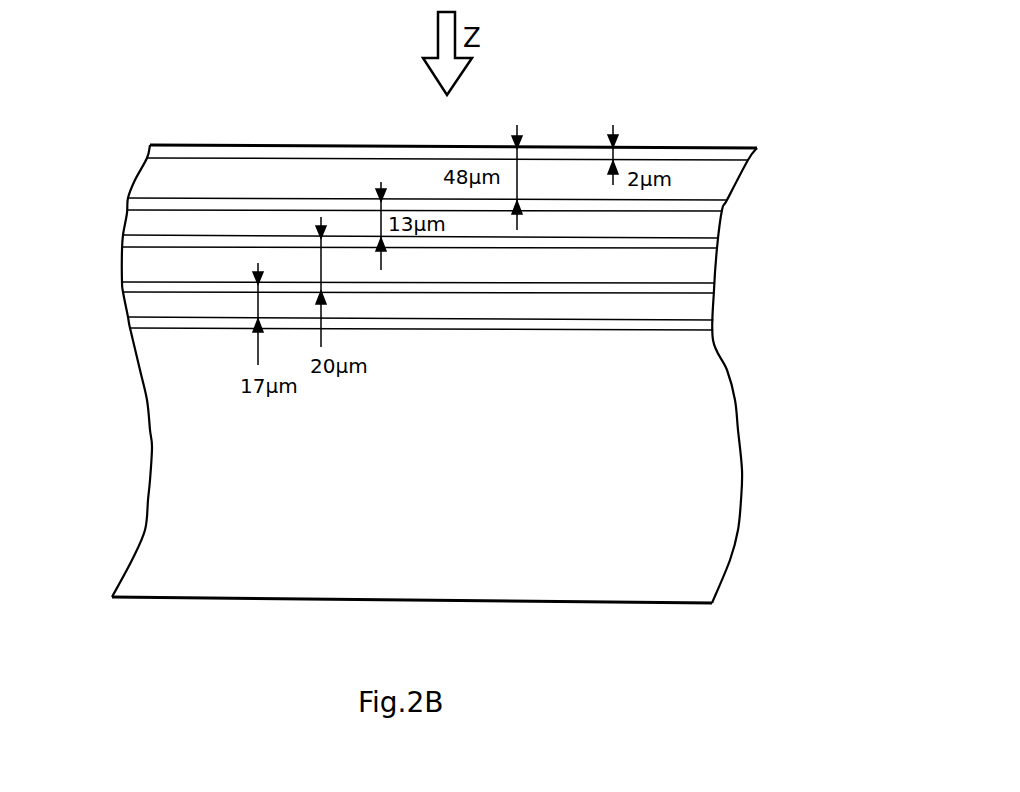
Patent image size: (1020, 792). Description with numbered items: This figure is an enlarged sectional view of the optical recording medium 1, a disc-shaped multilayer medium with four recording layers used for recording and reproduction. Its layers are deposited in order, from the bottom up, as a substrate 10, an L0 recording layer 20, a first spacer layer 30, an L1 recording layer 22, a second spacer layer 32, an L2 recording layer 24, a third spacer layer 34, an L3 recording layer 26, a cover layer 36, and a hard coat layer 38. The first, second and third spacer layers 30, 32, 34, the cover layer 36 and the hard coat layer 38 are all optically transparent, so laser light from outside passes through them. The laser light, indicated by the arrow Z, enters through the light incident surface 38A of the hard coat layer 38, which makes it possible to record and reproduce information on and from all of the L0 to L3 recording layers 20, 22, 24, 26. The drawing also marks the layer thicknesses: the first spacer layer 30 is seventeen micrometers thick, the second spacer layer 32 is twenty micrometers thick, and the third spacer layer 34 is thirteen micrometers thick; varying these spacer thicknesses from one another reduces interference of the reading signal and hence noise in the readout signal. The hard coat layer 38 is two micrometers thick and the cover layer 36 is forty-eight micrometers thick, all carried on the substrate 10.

The optical recording medium 1 is at (790, 104).
The substrate 10 is at (723, 495).
The L0 recording layer 20 is at (713, 332).
The L1 recording layer 22 is at (713, 295).
The L2 recording layer 24 is at (717, 250).
The L3 recording layer 26 is at (722, 212).
The first spacer layer 30 is at (138, 302).
The second spacer layer 32 is at (133, 262).
The third spacer layer 34 is at (137, 220).
The cover layer 36 is at (147, 183).
The hard coat layer 38 is at (150, 153).
The light incident surface 38A is at (210, 145).